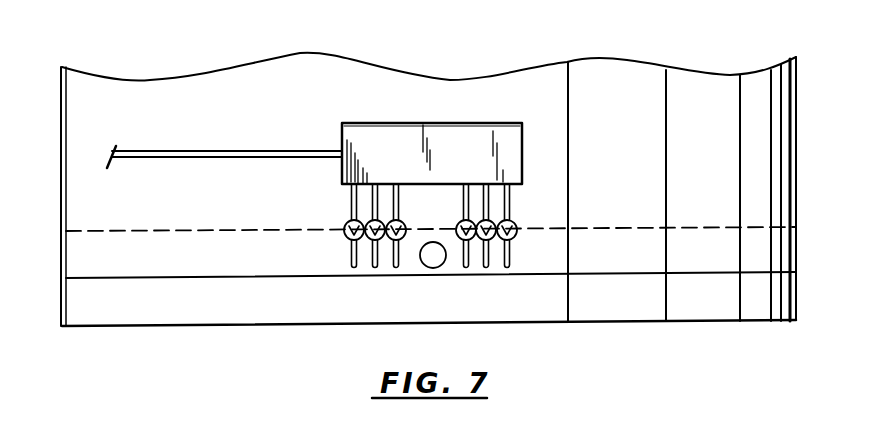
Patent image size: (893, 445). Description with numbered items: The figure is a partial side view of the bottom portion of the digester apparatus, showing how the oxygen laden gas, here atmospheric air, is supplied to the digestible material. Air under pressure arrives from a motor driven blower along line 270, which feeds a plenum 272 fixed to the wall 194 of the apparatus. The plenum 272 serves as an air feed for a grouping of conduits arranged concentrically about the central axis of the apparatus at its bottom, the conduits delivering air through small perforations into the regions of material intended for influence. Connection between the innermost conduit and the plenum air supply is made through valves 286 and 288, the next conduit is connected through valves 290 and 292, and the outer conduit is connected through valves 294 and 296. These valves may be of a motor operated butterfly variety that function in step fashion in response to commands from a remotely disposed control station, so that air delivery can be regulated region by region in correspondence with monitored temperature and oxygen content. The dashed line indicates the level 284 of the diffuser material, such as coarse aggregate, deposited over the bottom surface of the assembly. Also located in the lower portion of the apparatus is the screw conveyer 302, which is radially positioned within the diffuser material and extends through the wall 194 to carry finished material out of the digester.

The wall 194 is at (607, 78).
The line 270 is at (246, 151).
The plenum 272 is at (399, 137).
The level of diffuser material 284 is at (675, 226).
The valve 286 is at (347, 240).
The valve 288 is at (512, 241).
The valve 290 is at (352, 219).
The valve 292 is at (510, 218).
The valve 294 is at (352, 213).
The valve 296 is at (505, 213).
The screw conveyer 302 is at (428, 268).